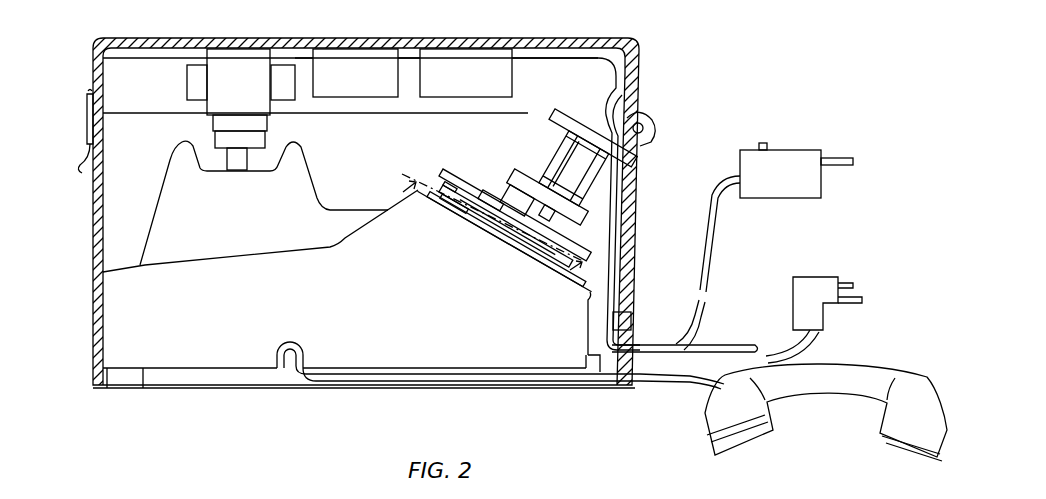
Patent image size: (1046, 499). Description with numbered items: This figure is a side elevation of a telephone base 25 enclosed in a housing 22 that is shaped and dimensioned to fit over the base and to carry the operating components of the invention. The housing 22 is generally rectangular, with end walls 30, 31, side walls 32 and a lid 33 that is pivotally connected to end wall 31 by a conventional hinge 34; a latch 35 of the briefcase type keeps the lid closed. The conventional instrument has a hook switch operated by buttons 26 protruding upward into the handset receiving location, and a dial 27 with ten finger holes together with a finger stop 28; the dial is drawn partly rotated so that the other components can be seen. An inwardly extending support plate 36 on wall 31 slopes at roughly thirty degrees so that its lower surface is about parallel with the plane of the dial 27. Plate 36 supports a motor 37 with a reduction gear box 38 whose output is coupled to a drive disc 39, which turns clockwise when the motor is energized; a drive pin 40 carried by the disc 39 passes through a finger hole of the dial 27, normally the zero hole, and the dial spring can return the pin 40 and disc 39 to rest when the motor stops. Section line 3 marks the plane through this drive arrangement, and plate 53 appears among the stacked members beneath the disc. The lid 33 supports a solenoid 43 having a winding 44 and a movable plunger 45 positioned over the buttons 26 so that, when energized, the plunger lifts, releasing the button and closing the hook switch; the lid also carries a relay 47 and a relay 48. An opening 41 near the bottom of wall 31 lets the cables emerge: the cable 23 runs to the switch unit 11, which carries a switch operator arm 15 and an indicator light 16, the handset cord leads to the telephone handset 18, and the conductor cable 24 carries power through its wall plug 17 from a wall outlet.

The section line 3- 3 is at (492, 230).
The switch unit 11 is at (802, 150).
The switch operator arm 15 is at (847, 158).
The indicator light 16 is at (763, 143).
The wall plug 17 is at (827, 303).
The telephone handset 18 is at (855, 365).
The housing 22 is at (93, 380).
The cable 23 is at (712, 237).
The conductor cable 24 is at (694, 349).
The telephone base 25 is at (185, 372).
The hook switch buttons 26 is at (227, 165).
The dial 27 is at (480, 220).
The finger stop 28 is at (572, 275).
The end wall 30 is at (104, 180).
The end wall 31 is at (638, 202).
The side walls 32 is at (347, 174).
The lid 33 is at (152, 38).
The hinge 34 is at (649, 121).
The latch 35 is at (73, 110).
The support plate 36 is at (554, 118).
The motor 37 is at (575, 146).
The reduction gear box 38 is at (512, 180).
The drive disc 39 is at (443, 173).
The drive pin 40 is at (450, 200).
The opening 41 is at (624, 323).
The solenoid 43 is at (207, 56).
The winding 44 is at (187, 82).
The plunger 45 is at (213, 129).
The relay 47 is at (406, 70).
The relay 48 is at (515, 70).
The plate 53 is at (485, 177).